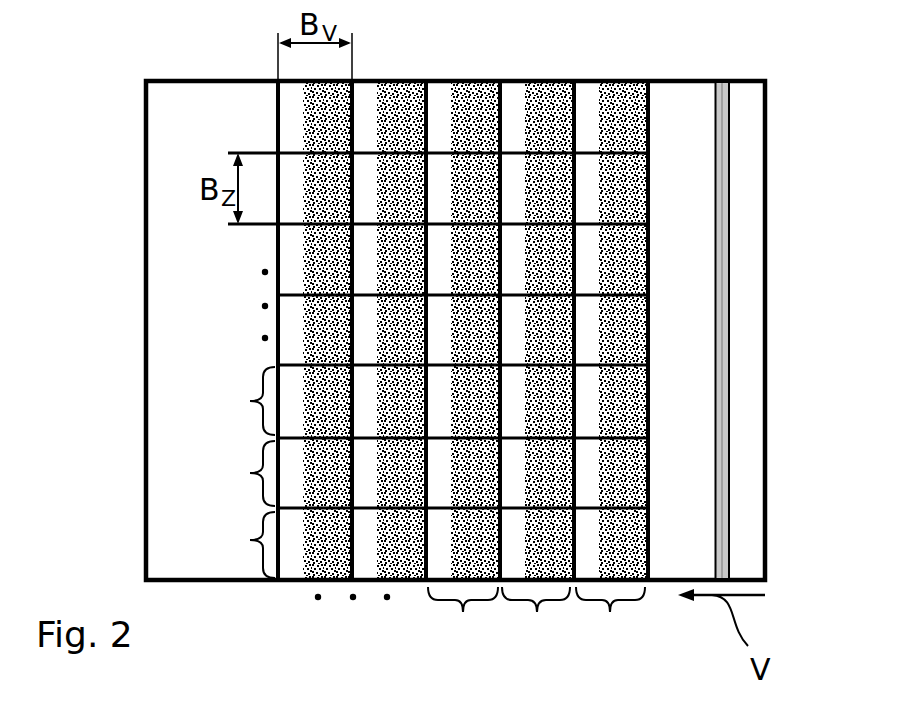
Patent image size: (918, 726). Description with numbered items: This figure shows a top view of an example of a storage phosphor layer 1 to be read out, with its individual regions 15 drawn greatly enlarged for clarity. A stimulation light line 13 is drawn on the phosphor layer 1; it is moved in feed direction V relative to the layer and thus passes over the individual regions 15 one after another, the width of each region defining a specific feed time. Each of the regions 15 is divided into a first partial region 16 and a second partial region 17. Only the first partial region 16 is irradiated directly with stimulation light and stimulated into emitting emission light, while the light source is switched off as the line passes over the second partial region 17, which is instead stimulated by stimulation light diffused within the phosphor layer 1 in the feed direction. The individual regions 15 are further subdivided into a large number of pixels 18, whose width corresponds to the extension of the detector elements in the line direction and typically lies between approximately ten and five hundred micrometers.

The phosphor layer 1 is at (186, 131).
The stimulation light line 13 is at (722, 95).
The individual regions 15 is at (610, 618).
The first partial region 16 is at (621, 106).
The second partial region 17 is at (590, 108).
The pixels 18 is at (247, 402).